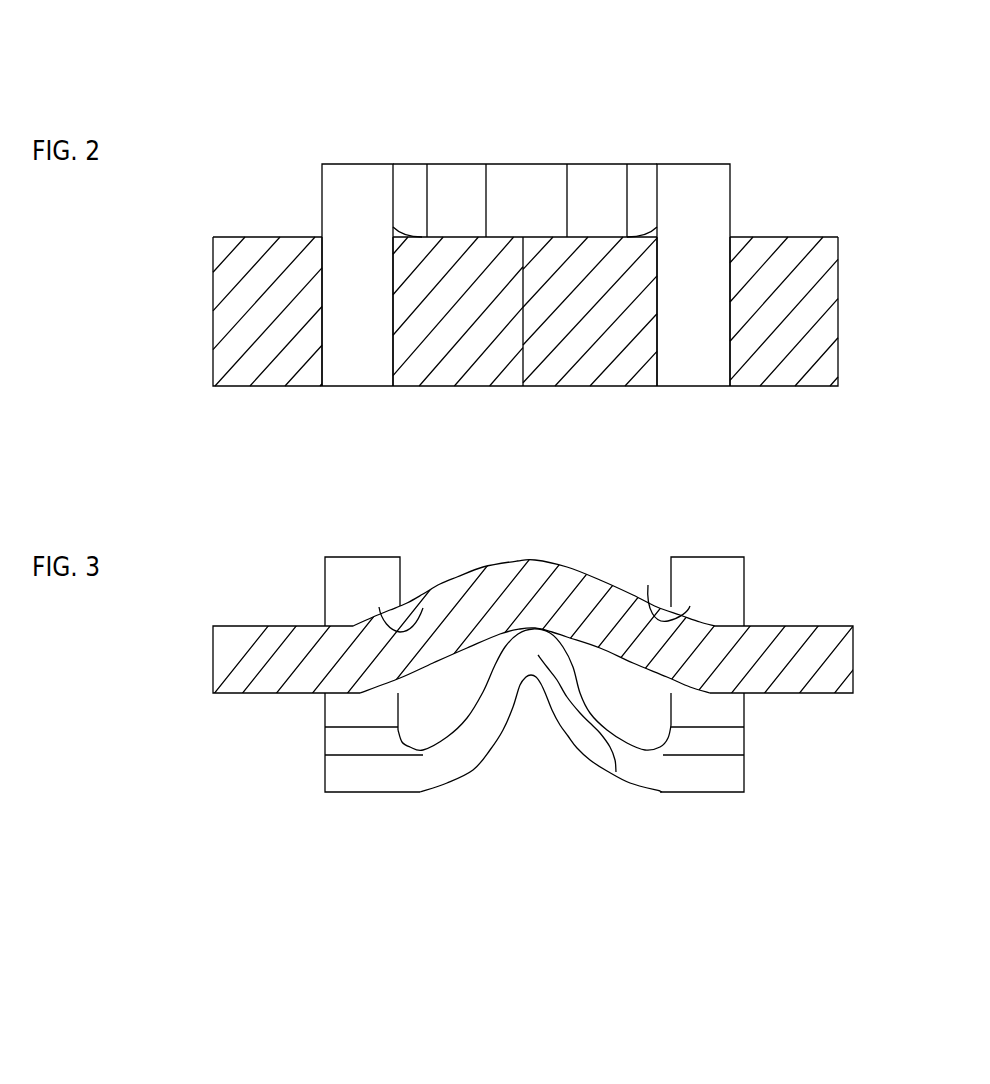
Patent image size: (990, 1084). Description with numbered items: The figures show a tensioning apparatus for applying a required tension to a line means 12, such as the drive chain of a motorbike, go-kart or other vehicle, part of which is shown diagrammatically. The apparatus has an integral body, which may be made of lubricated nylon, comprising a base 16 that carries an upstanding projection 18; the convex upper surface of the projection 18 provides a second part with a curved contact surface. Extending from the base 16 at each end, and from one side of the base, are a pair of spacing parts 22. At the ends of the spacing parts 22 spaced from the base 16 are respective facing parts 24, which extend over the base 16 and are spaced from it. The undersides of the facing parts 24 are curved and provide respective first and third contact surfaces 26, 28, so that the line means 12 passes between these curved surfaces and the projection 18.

In FIG. 2, the line means 12 is at (250, 362).
In FIG. 3, the line means 12 is at (832, 658).
In FIG. 3, the base 16 is at (433, 767).
In FIG. 2, the upstanding projection 18 is at (522, 192).
In FIG. 3, the upstanding projection 18 is at (616, 772).
In FIG. 3, the spacing parts 22 is at (707, 706).
In FIG. 2, the facing parts 24 is at (355, 279).
In FIG. 3, the facing parts 24 is at (717, 592).
In FIG. 3, the first contact surface 26 is at (423, 608).
In FIG. 3, the third contact surface 28 is at (648, 585).